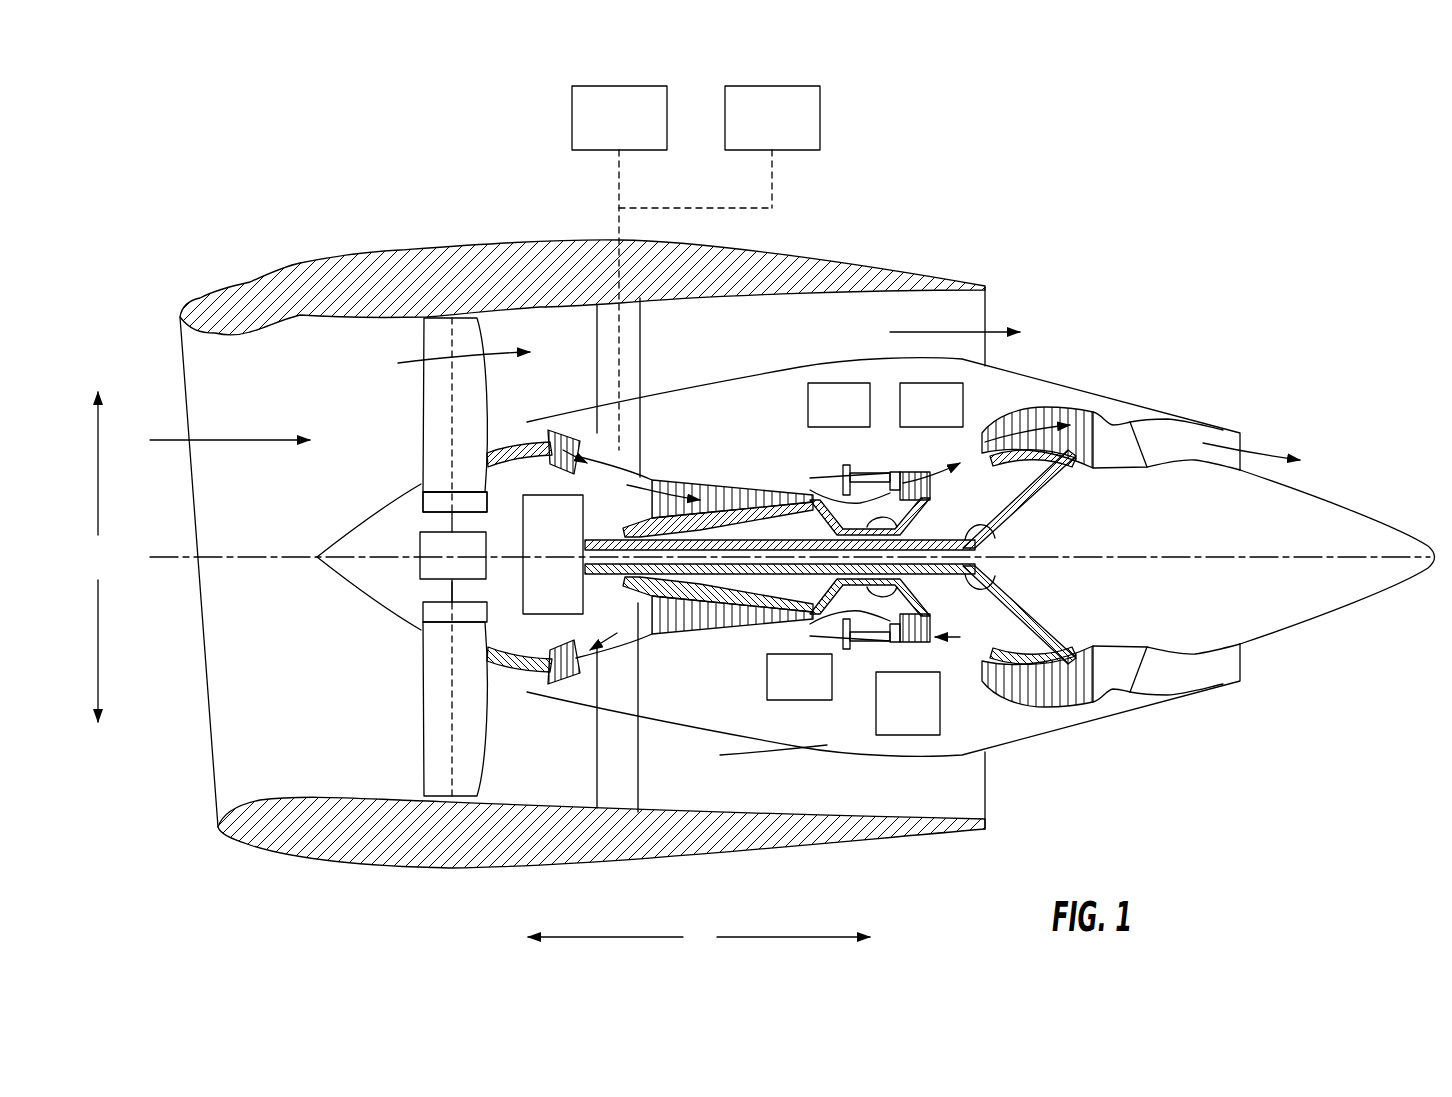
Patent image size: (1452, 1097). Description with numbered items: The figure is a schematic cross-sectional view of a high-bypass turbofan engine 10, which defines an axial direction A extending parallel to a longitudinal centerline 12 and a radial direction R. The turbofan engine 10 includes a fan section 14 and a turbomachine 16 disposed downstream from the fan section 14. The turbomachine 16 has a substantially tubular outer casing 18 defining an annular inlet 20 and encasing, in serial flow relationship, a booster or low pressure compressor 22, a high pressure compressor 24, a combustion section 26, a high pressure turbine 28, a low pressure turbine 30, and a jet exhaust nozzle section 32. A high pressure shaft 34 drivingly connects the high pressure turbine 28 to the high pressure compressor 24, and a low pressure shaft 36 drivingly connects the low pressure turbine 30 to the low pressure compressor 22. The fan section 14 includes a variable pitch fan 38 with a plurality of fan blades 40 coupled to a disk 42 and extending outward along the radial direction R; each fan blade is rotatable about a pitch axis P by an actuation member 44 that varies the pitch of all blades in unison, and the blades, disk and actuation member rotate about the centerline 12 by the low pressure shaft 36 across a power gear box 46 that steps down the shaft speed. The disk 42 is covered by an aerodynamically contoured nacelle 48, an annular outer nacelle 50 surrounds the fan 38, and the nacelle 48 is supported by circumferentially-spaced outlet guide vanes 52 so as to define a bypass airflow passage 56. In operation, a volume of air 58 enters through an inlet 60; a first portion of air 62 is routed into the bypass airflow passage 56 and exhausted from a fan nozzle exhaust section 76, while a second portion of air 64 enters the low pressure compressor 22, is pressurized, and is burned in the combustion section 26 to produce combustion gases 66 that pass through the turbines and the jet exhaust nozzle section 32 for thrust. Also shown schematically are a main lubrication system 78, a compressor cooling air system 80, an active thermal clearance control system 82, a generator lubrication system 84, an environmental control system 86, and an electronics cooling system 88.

The turbofan engine 10 is at (1148, 265).
The longitudinal centerline 12 is at (1170, 556).
The fan section 14 is at (373, 347).
The turbomachine 16 is at (781, 428).
The outer casing 18 is at (827, 745).
The annular inlet 20 is at (537, 677).
The low pressure compressor 22 is at (590, 620).
The high pressure compressor 24 is at (673, 620).
The combustion section 26 is at (867, 625).
The high pressure turbine 28 is at (960, 637).
The low pressure turbine 30 is at (1078, 703).
The jet exhaust nozzle section 32 is at (1147, 683).
The high pressure shaft 34 is at (913, 503).
The low pressure shaft 36 is at (1003, 517).
The variable pitch fan 38 is at (383, 622).
The fan blades 40 is at (420, 727).
The disk 42 is at (440, 503).
The actuation member 44 is at (417, 543).
The power gear box 46 is at (560, 513).
The nacelle 48 is at (335, 575).
The outer nacelle 50 is at (477, 868).
The outlet guide vanes 52 is at (640, 345).
The bypass airflow passage 56 is at (741, 347).
The volume of air 58 is at (172, 440).
The inlet 60 is at (213, 800).
The first portion of air 62 is at (452, 337).
The second portion of air 64 is at (507, 433).
The combustion gases 66 is at (907, 483).
The fan nozzle exhaust section 76 is at (970, 317).
The main lubrication system 78 is at (910, 735).
The compressor cooling air system 80 is at (787, 703).
The active thermal clearance control system 82 is at (898, 380).
The generator lubrication system 84 is at (837, 383).
The environmental control system 86 is at (620, 86).
The electronics cooling system 88 is at (773, 86).
The pitch axis P is at (457, 335).
The radial direction R is at (98, 557).
The axial direction A is at (699, 938).